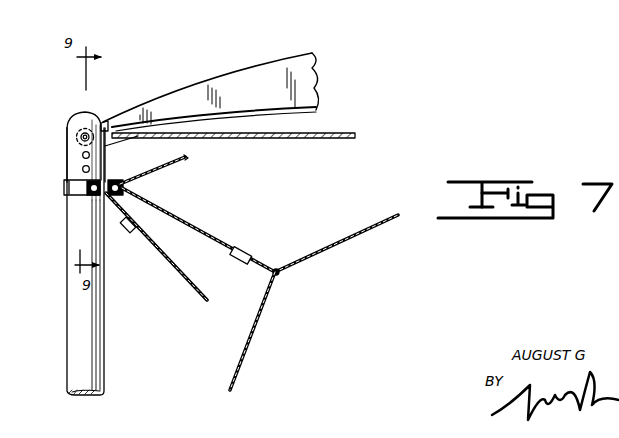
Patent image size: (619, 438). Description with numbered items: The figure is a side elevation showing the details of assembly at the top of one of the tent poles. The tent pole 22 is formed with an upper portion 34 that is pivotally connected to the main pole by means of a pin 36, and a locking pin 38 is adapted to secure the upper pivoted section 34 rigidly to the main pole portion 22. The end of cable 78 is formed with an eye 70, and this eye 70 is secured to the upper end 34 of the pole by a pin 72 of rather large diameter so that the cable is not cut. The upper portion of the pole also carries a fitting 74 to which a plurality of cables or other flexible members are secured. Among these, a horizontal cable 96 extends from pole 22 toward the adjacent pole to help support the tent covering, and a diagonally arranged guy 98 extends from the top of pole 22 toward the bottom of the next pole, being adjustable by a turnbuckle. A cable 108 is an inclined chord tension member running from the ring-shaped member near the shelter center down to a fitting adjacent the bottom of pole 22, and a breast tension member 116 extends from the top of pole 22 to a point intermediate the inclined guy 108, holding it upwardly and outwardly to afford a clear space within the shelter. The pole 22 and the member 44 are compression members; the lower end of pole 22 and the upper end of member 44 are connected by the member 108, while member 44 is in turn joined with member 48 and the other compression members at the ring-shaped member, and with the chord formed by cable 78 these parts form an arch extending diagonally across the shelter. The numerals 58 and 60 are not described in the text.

The tent pole 22 is at (66, 332).
The upper portion of tent pole 34 is at (78, 119).
The pin 36 is at (82, 156).
The locking pin 38 is at (82, 170).
The member 44 is at (292, 52).
The member 48 is at (240, 76).
The awning member 58 is at (590, 0).
The awning member 60 is at (554, 0).
The eye 70 is at (112, 126).
The pin 72 is at (77, 137).
The fitting 74 is at (66, 195).
The cable 78 is at (265, 139).
The horizontal cable 96 is at (189, 158).
The diagonally arranged guy 98 is at (170, 270).
The cable 108 is at (255, 334).
The breast tension member 116 is at (207, 240).